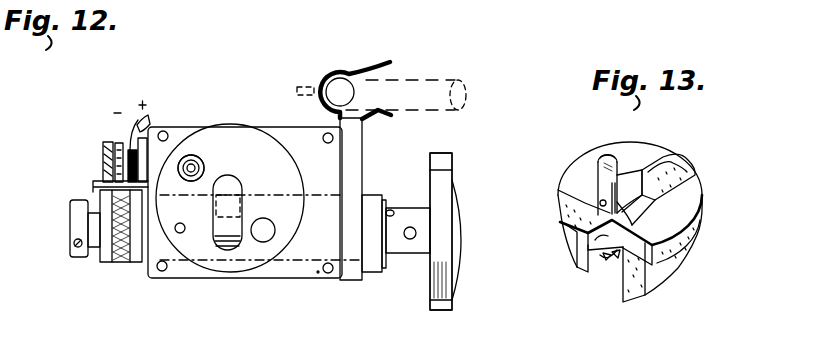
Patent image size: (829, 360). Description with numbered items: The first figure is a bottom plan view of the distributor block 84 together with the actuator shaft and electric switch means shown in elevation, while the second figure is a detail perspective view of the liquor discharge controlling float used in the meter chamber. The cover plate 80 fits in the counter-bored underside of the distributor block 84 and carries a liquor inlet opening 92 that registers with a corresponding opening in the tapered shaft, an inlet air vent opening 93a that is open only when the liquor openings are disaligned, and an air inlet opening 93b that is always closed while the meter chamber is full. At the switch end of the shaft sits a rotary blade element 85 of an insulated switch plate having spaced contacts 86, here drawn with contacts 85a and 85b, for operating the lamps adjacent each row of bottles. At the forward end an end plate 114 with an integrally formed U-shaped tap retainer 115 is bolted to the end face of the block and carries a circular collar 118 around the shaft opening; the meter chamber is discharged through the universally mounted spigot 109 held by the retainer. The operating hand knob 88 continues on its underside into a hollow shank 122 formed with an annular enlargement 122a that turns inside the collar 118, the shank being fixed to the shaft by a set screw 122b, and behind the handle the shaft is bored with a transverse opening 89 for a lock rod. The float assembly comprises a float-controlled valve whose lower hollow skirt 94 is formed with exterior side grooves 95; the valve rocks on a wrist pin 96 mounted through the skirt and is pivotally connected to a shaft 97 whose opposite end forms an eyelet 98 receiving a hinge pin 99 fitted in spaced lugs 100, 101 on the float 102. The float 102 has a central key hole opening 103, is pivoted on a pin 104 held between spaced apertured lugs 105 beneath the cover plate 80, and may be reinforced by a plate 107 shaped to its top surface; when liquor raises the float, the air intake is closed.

In FIG. 12, the cover plate 80 is at (255, 220).
In FIG. 12, the distributor block 84 is at (317, 277).
In FIG. 12, the rotary blade element 85 is at (103, 145).
In FIG. 12, the contact 85a is at (136, 140).
In FIG. 12, the contact 85b is at (140, 132).
In FIG. 12, the spaced contacts 86 is at (128, 150).
In FIG. 12, the operating hand knob 88 is at (448, 178).
In FIG. 12, the transverse opening 89 is at (410, 240).
In FIG. 12, the inlet opening 92 is at (265, 232).
In FIG. 12, the inlet air vent opening 93a is at (180, 236).
In FIG. 12, the air inlet opening 93b is at (204, 167).
In FIG. 12, the lower hollow skirt 94 is at (191, 156).
In FIG. 13, the lower hollow skirt 94 is at (598, 170).
In FIG. 13, the exterior side grooves 95 is at (617, 205).
In FIG. 13, the wrist pin 96 is at (598, 202).
In FIG. 13, the shaft 97 is at (598, 243).
In FIG. 13, the eyelet 98 is at (620, 177).
In FIG. 13, the hinge pin 99 is at (657, 260).
In FIG. 13, the lug 100 is at (617, 250).
In FIG. 13, the lug 101 is at (623, 253).
In FIG. 13, the float 102 is at (698, 229).
In FIG. 13, the central key hole opening 103 is at (687, 160).
In FIG. 13, the pin 104 is at (607, 252).
In FIG. 13, the spaced apertured lugs 105 is at (560, 228).
In FIG. 13, the plate 107 is at (683, 197).
In FIG. 12, the spigot 109 is at (442, 83).
In FIG. 12, the end plate 114 is at (362, 135).
In FIG. 12, the U-shaped tap retainer 115 is at (356, 70).
In FIG. 12, the circular collar 118 is at (370, 275).
In FIG. 12, the hollow shank 122 is at (425, 222).
In FIG. 12, the annular enlargement 122a is at (389, 265).
In FIG. 12, the set screw 122b is at (413, 186).